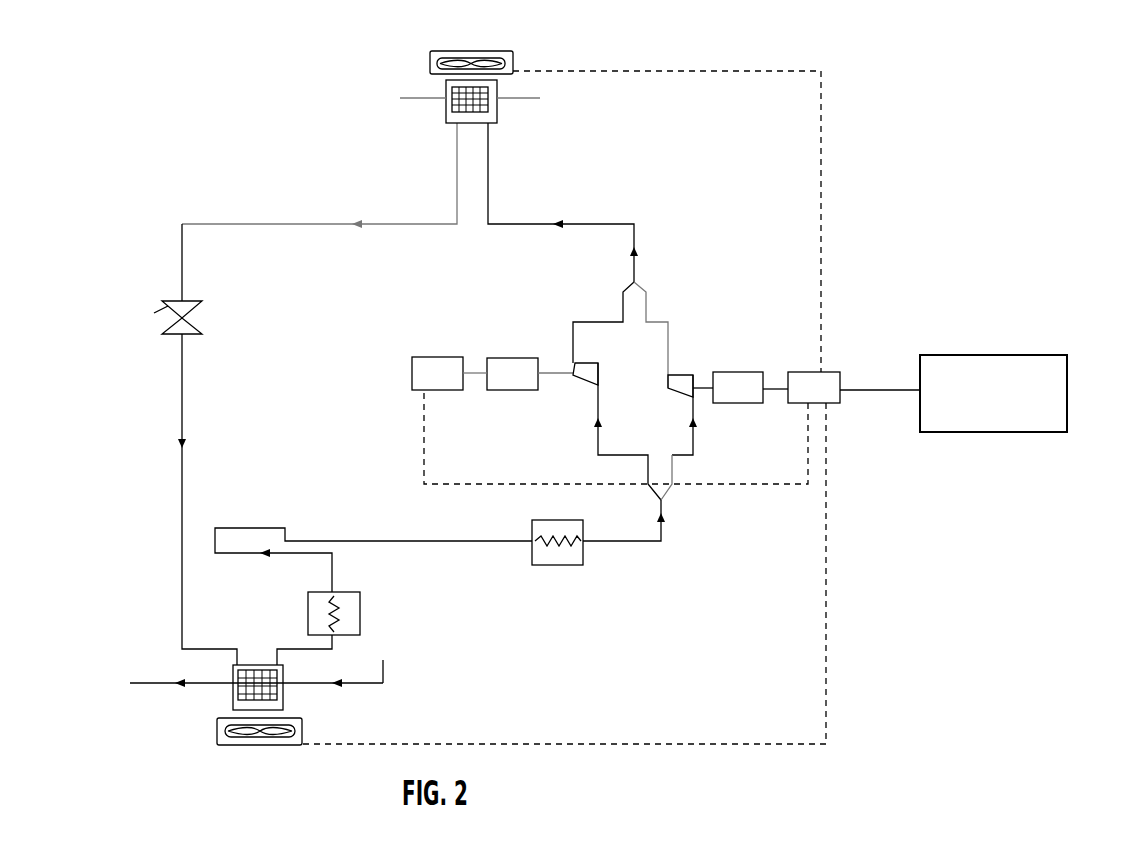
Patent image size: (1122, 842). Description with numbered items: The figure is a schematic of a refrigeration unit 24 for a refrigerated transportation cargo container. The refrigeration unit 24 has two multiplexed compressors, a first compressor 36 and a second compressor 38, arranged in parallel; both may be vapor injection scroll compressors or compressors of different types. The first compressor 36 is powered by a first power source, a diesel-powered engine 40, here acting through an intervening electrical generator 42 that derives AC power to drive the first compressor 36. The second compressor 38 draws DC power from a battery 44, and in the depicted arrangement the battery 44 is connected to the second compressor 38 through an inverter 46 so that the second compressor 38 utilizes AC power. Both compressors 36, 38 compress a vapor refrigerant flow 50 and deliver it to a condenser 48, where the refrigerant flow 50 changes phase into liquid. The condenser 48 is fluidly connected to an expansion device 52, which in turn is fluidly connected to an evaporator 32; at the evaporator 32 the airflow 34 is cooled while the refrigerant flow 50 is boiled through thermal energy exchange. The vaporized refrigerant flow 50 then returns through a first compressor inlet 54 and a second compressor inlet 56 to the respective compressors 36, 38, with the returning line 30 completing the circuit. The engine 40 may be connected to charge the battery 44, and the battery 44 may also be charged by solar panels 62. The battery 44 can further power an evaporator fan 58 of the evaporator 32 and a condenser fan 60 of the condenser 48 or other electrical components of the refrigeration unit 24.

The refrigeration unit 24 is at (180, 166).
The refrigerant conduit 30 is at (210, 648).
The evaporator 32 is at (259, 664).
The airflow 34 is at (366, 688).
The first compressor 36 is at (576, 368).
The second compressor 38 is at (667, 384).
The diesel-powered engine 40 is at (437, 373).
The electrical generator 42 is at (518, 374).
The battery 44 is at (826, 386).
The inverter 46 is at (741, 383).
The condenser 48 is at (500, 113).
The refrigerant flow 50 is at (530, 227).
The expansion device 52 is at (152, 279).
The first compressor inlet 54 is at (597, 386).
The second compressor inlet 56 is at (700, 401).
The evaporator fan 58 is at (305, 726).
The condenser fan 60 is at (515, 70).
The solar panels 62 is at (953, 393).